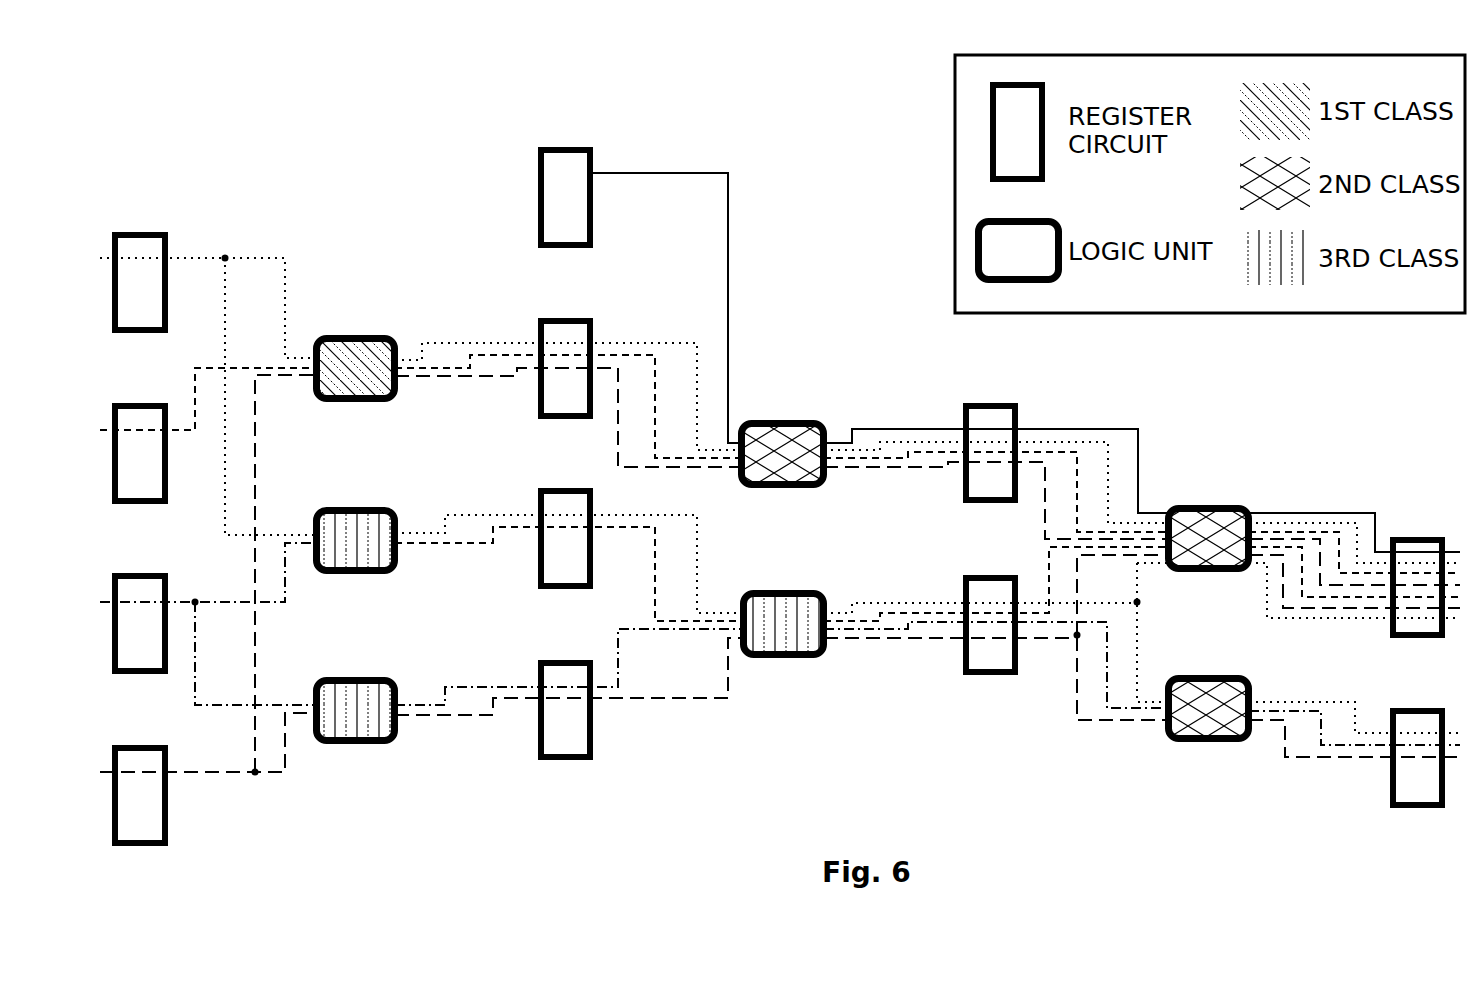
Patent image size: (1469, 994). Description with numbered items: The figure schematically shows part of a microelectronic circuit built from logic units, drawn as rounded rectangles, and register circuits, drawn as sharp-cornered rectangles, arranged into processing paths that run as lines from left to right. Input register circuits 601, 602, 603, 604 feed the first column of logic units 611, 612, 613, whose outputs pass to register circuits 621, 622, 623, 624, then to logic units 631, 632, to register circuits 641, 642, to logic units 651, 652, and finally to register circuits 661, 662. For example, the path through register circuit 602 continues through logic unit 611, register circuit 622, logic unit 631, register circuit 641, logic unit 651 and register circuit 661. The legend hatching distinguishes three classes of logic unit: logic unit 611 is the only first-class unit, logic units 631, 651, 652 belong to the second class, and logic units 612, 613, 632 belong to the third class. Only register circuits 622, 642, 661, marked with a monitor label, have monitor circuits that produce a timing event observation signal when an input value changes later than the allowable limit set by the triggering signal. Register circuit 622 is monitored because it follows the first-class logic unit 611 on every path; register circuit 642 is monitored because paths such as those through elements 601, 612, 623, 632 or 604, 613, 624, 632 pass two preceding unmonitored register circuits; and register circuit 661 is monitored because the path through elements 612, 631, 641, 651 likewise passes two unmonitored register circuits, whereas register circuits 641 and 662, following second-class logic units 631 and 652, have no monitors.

The register circuit 601 is at (114, 334).
The register circuit 602 is at (114, 505).
The register circuit 603 is at (114, 675).
The register circuit 604 is at (114, 847).
The logic unit 611 is at (332, 402).
The logic unit 612 is at (332, 573).
The logic unit 613 is at (332, 743).
The register circuit 621 is at (540, 249).
The register circuit 622 is at (540, 420).
The register circuit 623 is at (540, 590).
The register circuit 624 is at (540, 760).
The logic unit 631 is at (757, 488).
The logic unit 632 is at (757, 658).
The register circuit 641 is at (965, 504).
The register circuit 642 is at (965, 676).
The logic unit 651 is at (1182, 572).
The logic unit 652 is at (1182, 742).
The register circuit 661 is at (1392, 639).
The register circuit 662 is at (1392, 809).